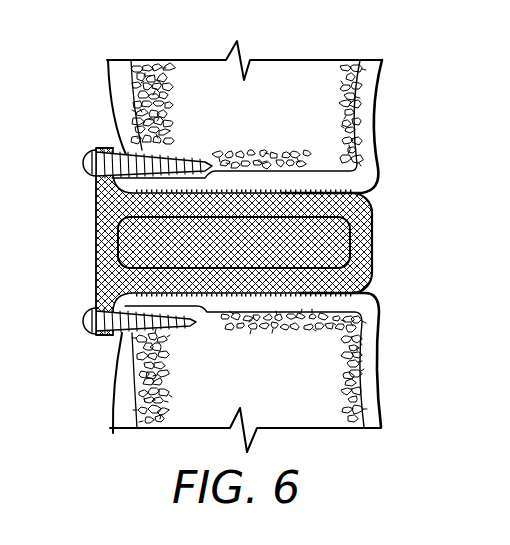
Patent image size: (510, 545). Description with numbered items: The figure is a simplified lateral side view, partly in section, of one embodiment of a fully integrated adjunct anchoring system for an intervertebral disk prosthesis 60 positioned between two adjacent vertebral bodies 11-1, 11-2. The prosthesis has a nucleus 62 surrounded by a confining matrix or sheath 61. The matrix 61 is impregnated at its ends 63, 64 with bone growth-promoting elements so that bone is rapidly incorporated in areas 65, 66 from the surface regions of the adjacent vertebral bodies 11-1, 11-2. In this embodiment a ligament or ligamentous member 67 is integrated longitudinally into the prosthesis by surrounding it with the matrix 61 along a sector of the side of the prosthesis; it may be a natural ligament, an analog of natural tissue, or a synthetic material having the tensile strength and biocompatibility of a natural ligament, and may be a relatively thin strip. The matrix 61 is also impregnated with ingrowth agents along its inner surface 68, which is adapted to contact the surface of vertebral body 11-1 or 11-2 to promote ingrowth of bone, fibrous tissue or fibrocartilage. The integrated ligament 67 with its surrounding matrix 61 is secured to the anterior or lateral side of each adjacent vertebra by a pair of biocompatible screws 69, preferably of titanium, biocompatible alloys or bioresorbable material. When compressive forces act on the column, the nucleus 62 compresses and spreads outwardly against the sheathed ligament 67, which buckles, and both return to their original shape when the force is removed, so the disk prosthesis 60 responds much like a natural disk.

The vertebral body 11-1 is at (197, 73).
The vertebral body 11-2 is at (313, 412).
The intervertebral disk prosthesis 60 is at (234, 241).
The confining matrix or sheath 61 is at (98, 268).
The nucleus 62 is at (98, 219).
The end of matrix 63 is at (215, 186).
The end of matrix 64 is at (193, 327).
The area of bone incorporation 65 is at (290, 173).
The area of bone incorporation 66 is at (290, 304).
The ligamentous member 67 is at (98, 243).
The inner surface of matrix 68 is at (113, 157).
The biocompatible screw 69 is at (83, 164).